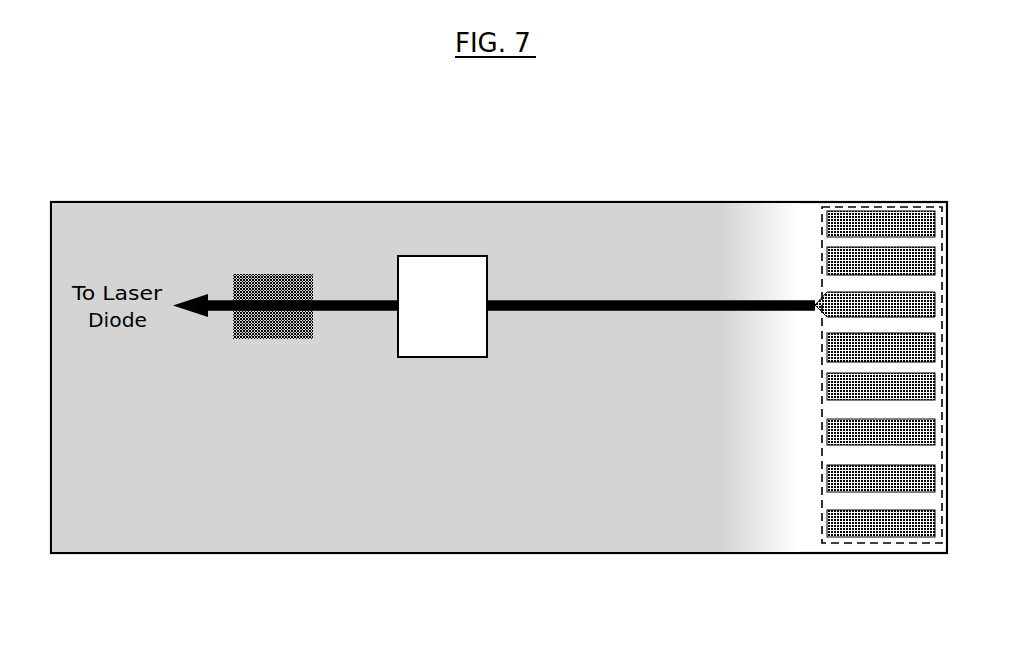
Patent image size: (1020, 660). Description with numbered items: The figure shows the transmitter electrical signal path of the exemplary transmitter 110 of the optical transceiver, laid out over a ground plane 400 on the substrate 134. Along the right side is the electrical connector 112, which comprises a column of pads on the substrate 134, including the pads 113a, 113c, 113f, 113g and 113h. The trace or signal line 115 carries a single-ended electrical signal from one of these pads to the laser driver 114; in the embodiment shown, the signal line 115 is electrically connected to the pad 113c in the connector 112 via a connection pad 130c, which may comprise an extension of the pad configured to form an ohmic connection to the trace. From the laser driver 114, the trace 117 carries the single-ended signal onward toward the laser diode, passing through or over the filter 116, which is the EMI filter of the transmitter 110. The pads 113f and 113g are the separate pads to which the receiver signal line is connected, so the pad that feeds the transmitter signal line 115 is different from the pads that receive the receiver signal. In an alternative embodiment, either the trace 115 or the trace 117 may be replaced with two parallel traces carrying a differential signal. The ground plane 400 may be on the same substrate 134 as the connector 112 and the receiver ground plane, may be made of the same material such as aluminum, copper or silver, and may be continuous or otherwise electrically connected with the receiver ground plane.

The transmitter 110 is at (336, 130).
The ground plane 400 is at (650, 210).
The substrate 134 is at (448, 556).
The electrical connector 112 is at (858, 206).
The pad 113a is at (900, 222).
The pad 113c is at (907, 315).
The pad 113f is at (905, 442).
The pad 113g is at (909, 488).
The pad 113h is at (887, 526).
The connection pad 130c is at (817, 316).
The EMI filter 116 is at (263, 330).
The trace 117 is at (350, 300).
The trace 115 is at (569, 300).
The laser driver 114 is at (487, 345).